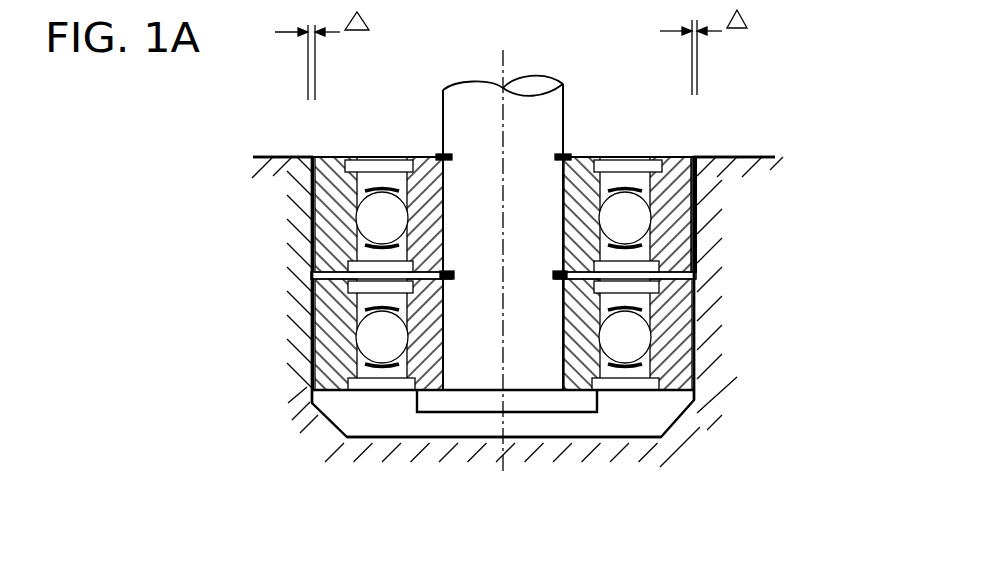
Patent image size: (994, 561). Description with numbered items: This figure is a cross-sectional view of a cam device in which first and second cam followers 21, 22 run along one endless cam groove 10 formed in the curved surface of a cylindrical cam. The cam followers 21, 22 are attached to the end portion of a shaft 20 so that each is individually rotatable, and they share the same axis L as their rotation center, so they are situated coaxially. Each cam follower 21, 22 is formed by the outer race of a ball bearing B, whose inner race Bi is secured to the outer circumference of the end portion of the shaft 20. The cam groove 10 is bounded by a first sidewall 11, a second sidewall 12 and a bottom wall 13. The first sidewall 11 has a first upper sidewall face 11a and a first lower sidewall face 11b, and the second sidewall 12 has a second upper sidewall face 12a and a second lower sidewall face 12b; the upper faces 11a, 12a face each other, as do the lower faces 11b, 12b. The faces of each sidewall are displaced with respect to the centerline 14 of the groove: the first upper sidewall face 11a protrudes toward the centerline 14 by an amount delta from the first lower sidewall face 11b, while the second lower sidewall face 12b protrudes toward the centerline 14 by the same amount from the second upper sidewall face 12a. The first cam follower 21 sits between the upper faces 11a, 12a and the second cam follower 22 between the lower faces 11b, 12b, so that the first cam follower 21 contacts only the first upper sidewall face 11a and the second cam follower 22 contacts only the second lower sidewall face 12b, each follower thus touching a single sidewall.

The cam groove 10 is at (343, 413).
The first sidewall 11 is at (310, 206).
The second sidewall 12 is at (712, 193).
The first upper sidewall face 11a is at (325, 161).
The first lower sidewall face 11b is at (313, 312).
The second upper sidewall face 12a is at (697, 159).
The second lower sidewall face 12b is at (700, 311).
The bottom wall 13 is at (388, 447).
The centerline 14 is at (505, 420).
The shaft 20 is at (473, 380).
The first cam follower 21 is at (314, 234).
The second cam follower 22 is at (315, 367).
The ball bearing B is at (639, 154).
The inner race of the ball bearing Bi is at (596, 168).
The axis L is at (503, 127).